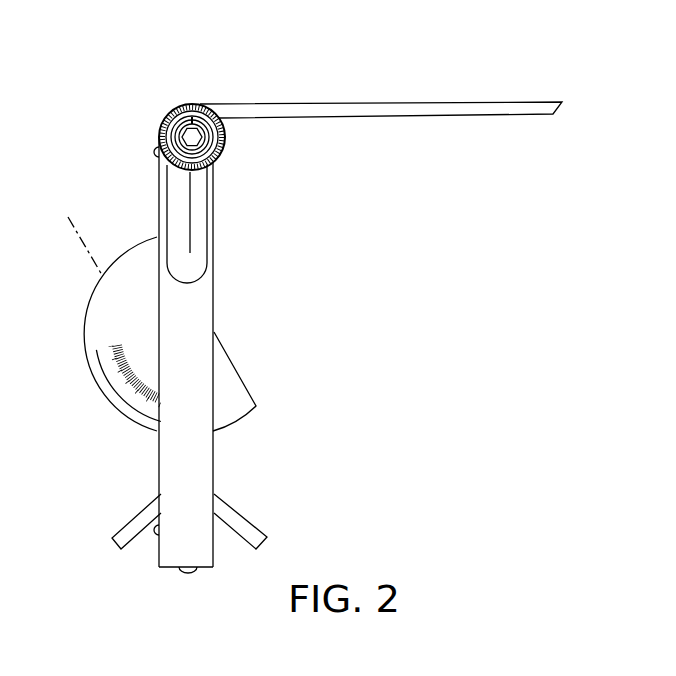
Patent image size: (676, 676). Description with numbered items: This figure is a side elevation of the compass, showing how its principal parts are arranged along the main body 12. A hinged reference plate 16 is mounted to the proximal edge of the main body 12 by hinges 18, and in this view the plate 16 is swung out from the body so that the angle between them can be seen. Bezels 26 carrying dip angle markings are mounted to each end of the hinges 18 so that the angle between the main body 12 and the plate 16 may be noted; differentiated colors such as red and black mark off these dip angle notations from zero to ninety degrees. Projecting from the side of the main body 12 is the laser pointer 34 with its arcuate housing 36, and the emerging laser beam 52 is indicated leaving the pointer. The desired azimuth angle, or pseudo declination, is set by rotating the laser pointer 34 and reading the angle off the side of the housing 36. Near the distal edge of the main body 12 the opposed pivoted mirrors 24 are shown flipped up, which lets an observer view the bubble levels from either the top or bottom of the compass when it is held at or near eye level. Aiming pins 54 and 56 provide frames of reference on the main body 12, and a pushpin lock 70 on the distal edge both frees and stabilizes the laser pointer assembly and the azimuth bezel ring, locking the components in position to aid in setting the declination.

The main body 12 is at (215, 483).
The hinged reference plate 16 is at (427, 102).
The hinges 18 is at (203, 105).
The pivoted mirrors 24 is at (136, 513).
The bezels 26 is at (169, 106).
The laser pointer 34 is at (143, 238).
The arcuate housing 36 is at (250, 385).
The laser beam 52 is at (92, 256).
The aiming pin 54 is at (154, 150).
The aiming pin 56 is at (157, 532).
The pushpin lock 70 is at (180, 569).